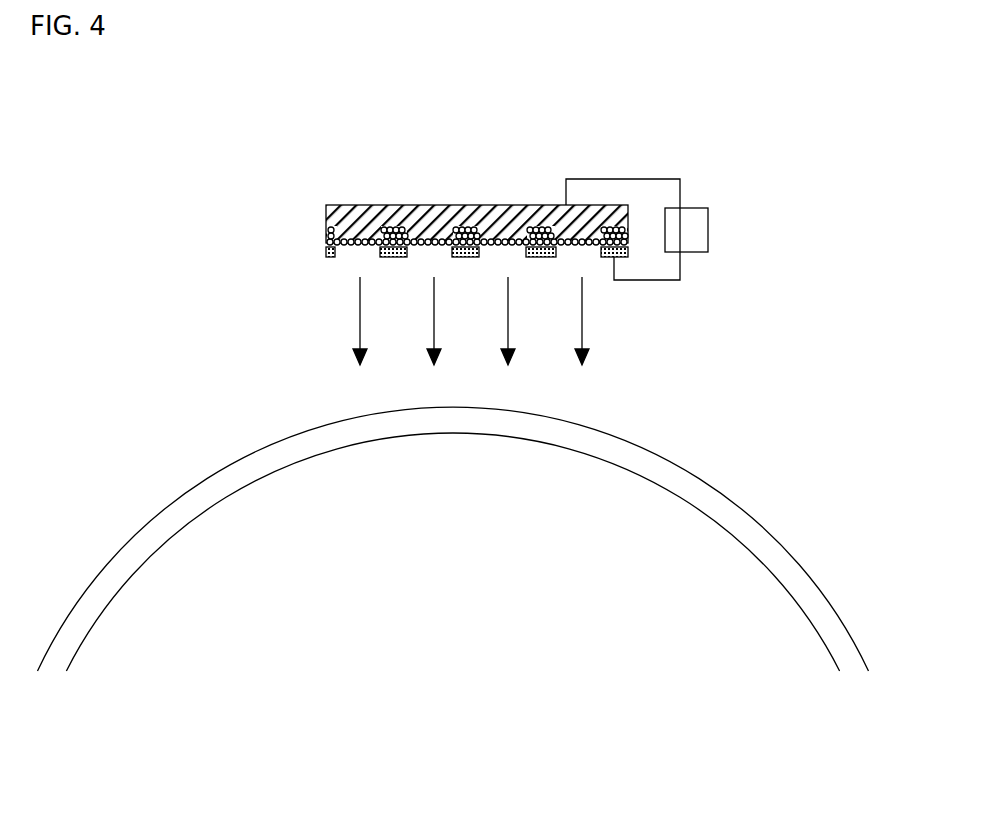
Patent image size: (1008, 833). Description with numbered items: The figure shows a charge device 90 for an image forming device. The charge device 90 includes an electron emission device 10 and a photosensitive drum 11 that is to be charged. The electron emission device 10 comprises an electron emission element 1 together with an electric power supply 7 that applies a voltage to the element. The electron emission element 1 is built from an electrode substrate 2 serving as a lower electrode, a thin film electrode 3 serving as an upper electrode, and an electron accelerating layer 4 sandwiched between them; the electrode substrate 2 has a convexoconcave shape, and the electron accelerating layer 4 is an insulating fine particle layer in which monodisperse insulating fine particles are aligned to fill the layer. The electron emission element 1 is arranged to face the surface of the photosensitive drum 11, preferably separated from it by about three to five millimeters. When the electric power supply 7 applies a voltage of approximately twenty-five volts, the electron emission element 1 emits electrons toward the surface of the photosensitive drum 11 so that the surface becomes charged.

The charge device 90 is at (518, 137).
The electron emission device 10 is at (545, 186).
The electron emission element 1 is at (272, 192).
The electrode substrate 2 is at (326, 212).
The electron accelerating layer 4 is at (327, 226).
The thin film electrode 3 is at (326, 250).
The electric power supply 7 is at (708, 230).
The photosensitive drum 11 is at (743, 472).